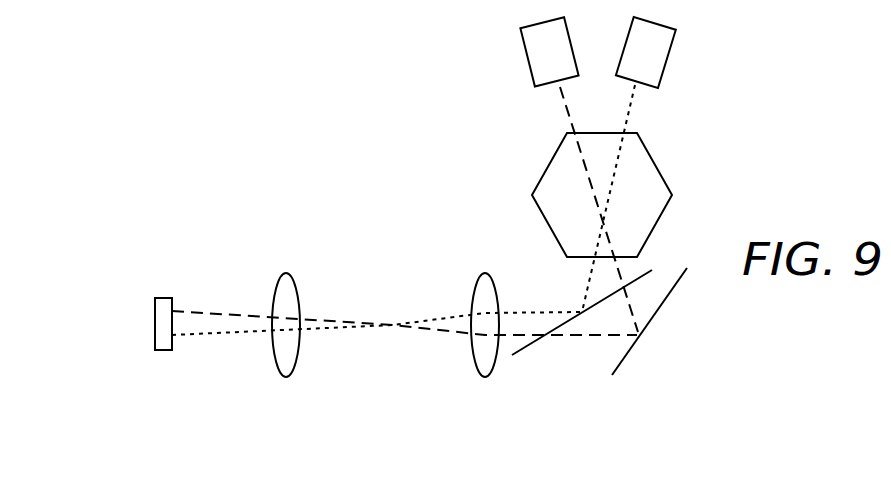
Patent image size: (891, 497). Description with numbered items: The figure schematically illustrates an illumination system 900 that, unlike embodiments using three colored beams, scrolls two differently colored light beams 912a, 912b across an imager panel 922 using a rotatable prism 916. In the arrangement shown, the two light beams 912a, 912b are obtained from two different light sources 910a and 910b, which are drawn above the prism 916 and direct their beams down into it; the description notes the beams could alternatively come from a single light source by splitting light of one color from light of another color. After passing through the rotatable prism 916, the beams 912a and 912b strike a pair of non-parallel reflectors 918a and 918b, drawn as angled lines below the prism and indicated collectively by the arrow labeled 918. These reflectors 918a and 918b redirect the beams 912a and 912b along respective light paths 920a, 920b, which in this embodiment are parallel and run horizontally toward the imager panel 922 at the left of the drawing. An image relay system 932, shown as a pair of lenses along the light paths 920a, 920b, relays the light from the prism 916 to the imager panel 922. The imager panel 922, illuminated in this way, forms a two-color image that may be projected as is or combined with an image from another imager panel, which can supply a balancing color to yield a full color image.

The illumination system 900 is at (348, 156).
The light source 910a is at (524, 48).
The light source 910b is at (668, 53).
The light beam 912a is at (567, 107).
The light beam 912b is at (630, 105).
The rotatable prism 916 is at (667, 178).
The beam splitter assembly 918 is at (630, 395).
The reflector 918a is at (527, 347).
The reflector 918b is at (657, 313).
The light path 920a is at (530, 311).
The light path 920b is at (440, 330).
The imager panel 922 is at (155, 323).
The image relay system 932 is at (275, 290).